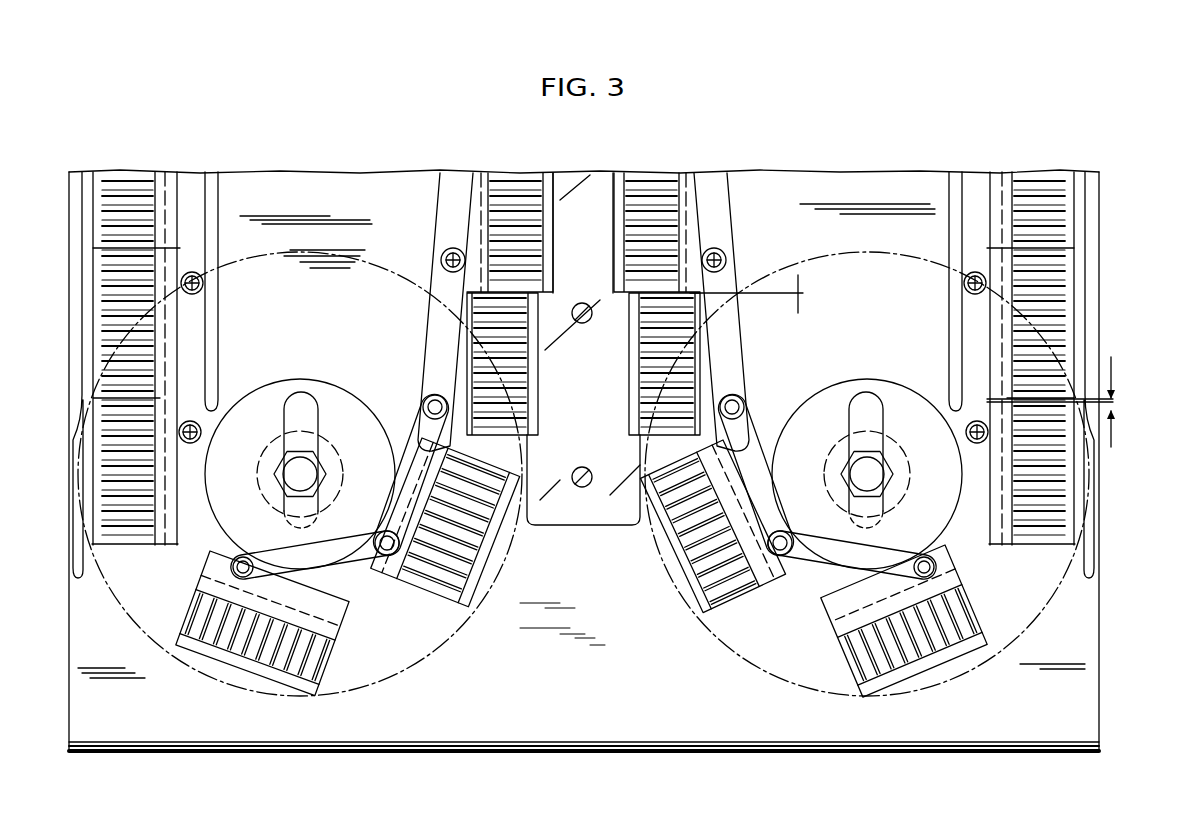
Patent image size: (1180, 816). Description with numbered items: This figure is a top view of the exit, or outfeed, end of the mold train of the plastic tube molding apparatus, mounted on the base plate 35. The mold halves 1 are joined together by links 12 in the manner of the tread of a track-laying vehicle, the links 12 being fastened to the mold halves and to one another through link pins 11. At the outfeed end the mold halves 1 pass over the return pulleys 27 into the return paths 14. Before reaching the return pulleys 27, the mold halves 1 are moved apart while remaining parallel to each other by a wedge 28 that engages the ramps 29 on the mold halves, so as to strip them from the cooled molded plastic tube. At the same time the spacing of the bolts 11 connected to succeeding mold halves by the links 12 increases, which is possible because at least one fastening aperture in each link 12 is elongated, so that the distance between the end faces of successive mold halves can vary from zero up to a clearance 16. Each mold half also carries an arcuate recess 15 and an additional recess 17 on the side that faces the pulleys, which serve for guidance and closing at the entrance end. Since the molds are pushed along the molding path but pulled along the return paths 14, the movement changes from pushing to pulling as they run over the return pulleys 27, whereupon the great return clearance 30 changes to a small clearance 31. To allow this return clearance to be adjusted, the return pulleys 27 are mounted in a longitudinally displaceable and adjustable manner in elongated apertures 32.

The mold halves 1 is at (481, 178).
The link pins 11 is at (201, 282).
The links 12 is at (428, 318).
The return paths 14 is at (82, 275).
The arcuate recess 15 is at (727, 251).
The clearance 16 is at (1065, 402).
The additional recesses 17 is at (446, 237).
The return pulleys 27 is at (252, 418).
The wedge 28 is at (570, 508).
The ramps 29 is at (257, 675).
The return clearance 30 is at (824, 566).
The small clearance 31 is at (956, 543).
The elongated apertures 32 is at (307, 405).
The base plate 35 is at (88, 708).